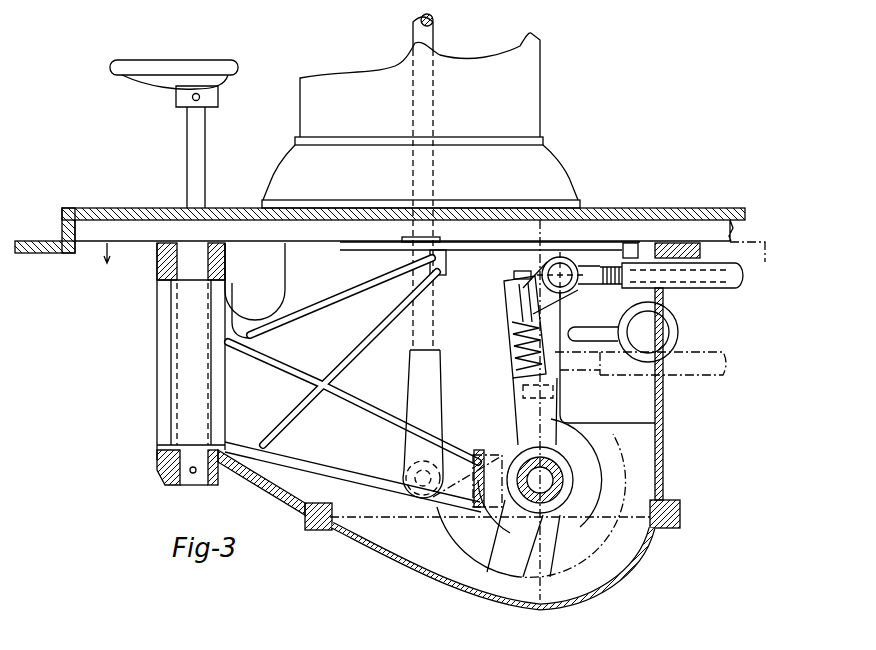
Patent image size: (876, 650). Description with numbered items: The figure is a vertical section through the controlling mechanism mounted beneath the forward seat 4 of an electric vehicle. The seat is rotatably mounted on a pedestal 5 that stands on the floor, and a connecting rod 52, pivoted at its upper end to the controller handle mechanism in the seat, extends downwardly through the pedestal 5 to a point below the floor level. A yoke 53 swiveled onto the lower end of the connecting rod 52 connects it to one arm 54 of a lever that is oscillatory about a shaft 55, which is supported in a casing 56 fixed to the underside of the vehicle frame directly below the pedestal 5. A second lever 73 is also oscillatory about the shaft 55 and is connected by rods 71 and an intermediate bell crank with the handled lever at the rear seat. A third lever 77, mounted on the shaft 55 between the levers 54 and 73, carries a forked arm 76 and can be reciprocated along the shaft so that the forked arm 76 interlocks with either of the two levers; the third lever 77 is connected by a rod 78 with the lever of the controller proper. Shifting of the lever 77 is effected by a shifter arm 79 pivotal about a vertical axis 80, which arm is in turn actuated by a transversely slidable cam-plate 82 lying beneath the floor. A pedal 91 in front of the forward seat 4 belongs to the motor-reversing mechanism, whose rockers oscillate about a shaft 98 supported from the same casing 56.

The extra forward seat 4 is at (434, 267).
The pedestal 5 is at (541, 95).
The connecting rod 52 is at (436, 31).
The yoke 53 is at (441, 378).
The lever arm 54 is at (442, 508).
The shaft 55 is at (562, 478).
The casing 56 is at (663, 470).
The rods 71 is at (723, 377).
The lever 73 is at (527, 409).
The forked arm 76 is at (502, 565).
The third lever 77 is at (506, 330).
The rod 78 is at (733, 290).
The shifter arm 79 is at (379, 363).
The vertical axis 80 is at (178, 368).
The cam-plate 82 is at (528, 248).
The pedal 91 is at (190, 137).
The shaft 98 is at (666, 332).